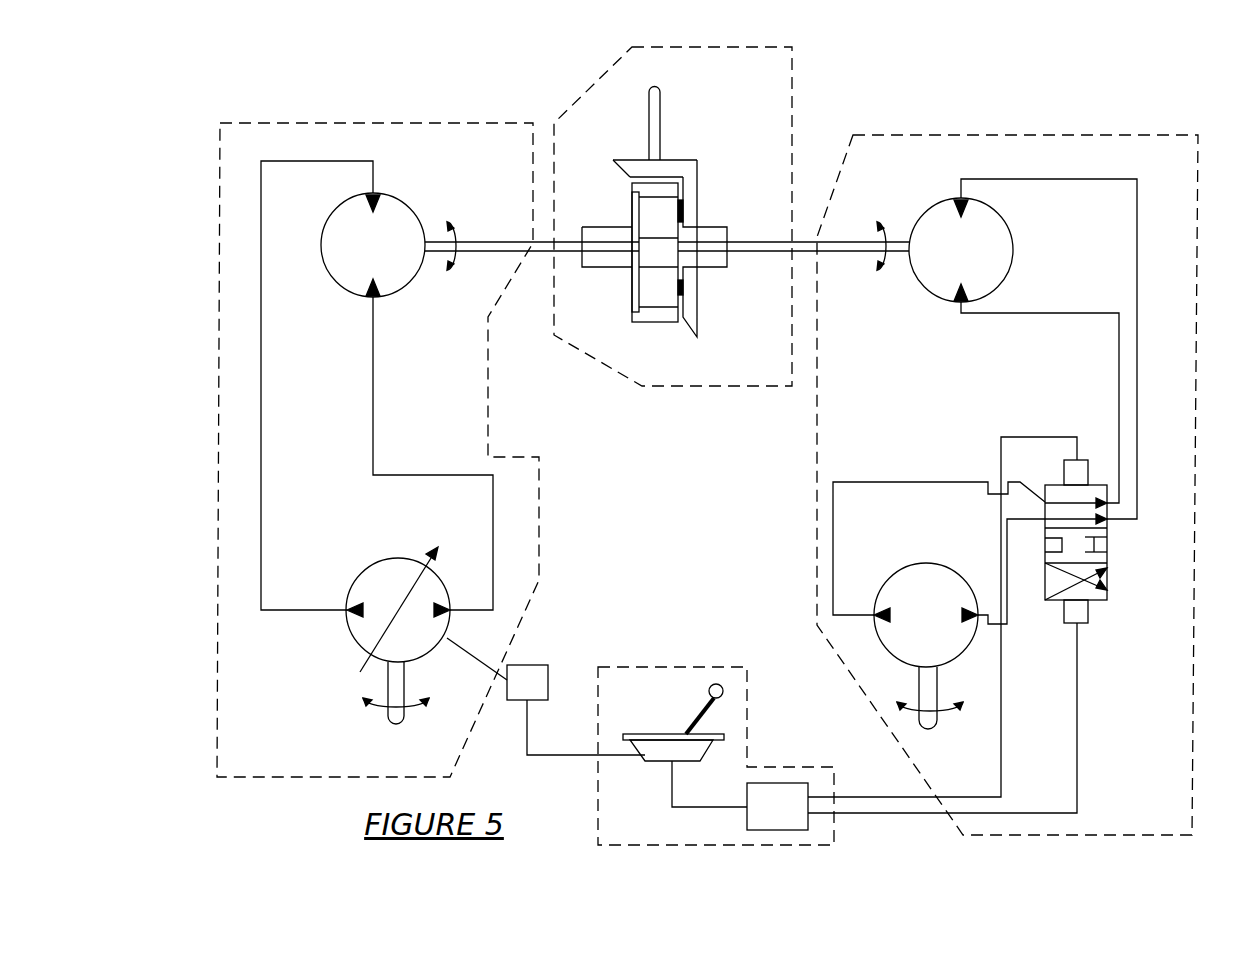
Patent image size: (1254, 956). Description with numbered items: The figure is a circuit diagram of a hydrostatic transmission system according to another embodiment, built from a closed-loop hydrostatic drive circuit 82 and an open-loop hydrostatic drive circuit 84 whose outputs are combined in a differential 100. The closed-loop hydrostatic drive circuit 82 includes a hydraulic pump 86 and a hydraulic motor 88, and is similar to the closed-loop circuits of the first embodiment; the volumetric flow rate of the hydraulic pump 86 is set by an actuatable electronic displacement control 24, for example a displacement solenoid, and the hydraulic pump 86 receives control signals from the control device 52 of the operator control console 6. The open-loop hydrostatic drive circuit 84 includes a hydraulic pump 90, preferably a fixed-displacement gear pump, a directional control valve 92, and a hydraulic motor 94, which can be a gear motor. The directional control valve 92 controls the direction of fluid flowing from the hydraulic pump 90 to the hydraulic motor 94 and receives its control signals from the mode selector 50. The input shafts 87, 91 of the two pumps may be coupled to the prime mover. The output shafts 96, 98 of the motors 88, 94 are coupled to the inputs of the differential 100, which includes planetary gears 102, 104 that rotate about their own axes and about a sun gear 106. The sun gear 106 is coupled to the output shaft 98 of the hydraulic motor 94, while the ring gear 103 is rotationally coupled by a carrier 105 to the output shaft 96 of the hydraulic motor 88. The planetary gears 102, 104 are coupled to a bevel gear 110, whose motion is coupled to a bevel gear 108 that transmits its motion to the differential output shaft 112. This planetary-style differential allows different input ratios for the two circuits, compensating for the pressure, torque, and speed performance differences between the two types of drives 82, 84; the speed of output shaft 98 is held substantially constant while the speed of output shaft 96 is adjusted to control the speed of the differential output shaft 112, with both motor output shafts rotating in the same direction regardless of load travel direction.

The operator control console 6 is at (665, 846).
The electronic displacement control 24 is at (528, 664).
The mode selector 50 is at (777, 806).
The control device 52 is at (655, 733).
The closed-loop hydrostatic drive circuit 82 is at (216, 366).
The open-loop hydrostatic drive circuit 84 is at (1202, 430).
The hydraulic pump 86 is at (370, 568).
The input shaft 87 is at (382, 712).
The hydraulic motor 88 is at (408, 285).
The hydraulic pump 90 is at (908, 567).
The input shaft 91 is at (940, 723).
The directional control valve 92 is at (1108, 556).
The hydraulic motor 94 is at (925, 293).
The output shaft 96 is at (502, 240).
The output shaft 98 is at (847, 242).
The differential 100 is at (583, 80).
The planetary gear 102 is at (662, 288).
The ring gear 103 is at (657, 315).
The planetary gear 104 is at (665, 218).
The carrier 105 is at (635, 212).
The sun gear 106 is at (647, 250).
The bevel gear 108 is at (637, 167).
The bevel gear 110 is at (695, 265).
The differential output shaft 112 is at (662, 112).